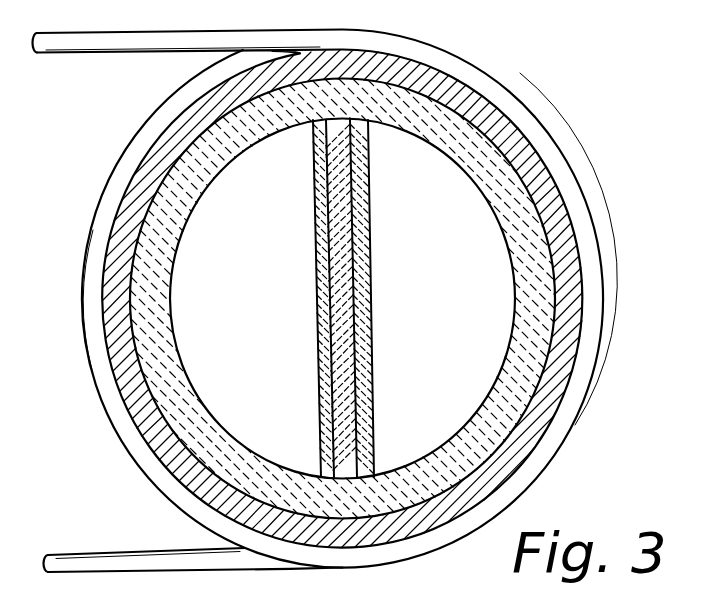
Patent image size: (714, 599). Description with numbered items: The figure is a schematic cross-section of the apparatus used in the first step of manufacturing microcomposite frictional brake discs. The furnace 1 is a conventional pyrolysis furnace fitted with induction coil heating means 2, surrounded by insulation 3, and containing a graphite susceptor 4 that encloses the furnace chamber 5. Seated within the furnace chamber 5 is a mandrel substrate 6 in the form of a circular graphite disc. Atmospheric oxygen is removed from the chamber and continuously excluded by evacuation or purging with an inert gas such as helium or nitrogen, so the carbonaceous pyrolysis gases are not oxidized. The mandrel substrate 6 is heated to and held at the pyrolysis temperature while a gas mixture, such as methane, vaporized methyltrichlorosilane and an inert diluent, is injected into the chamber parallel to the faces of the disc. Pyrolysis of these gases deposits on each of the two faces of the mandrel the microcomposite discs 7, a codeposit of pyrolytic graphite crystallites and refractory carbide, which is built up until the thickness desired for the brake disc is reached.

The furnace 1 is at (346, 291).
The induction coil heating means 2 is at (454, 53).
The insulation 3 is at (501, 127).
The graphite susceptor 4 is at (545, 268).
The furnace chamber 5 is at (497, 313).
The mandrel substrate 6 is at (353, 397).
The microcomposite discs 7 is at (317, 265).